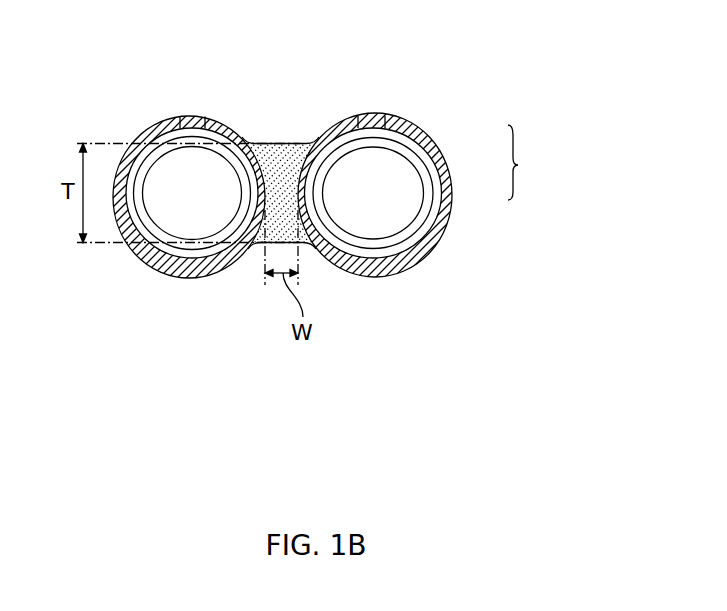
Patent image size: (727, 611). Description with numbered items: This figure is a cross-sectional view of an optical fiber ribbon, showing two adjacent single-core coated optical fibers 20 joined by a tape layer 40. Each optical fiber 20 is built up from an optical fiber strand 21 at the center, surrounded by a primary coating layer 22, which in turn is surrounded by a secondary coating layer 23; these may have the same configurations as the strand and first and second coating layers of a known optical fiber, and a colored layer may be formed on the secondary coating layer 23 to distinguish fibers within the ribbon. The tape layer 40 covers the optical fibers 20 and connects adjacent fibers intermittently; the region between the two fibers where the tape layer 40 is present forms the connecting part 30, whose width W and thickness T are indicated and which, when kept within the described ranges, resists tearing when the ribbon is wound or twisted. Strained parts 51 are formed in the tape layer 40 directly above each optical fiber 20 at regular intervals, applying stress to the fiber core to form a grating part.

The optical fiber 20 is at (531, 162).
The optical fiber strand 21 is at (405, 163).
The primary coating layer 22 is at (427, 182).
The secondary coating layer 23 is at (433, 207).
The connecting part 30 is at (278, 162).
The tape layer 40 is at (388, 118).
The strained part 51 is at (190, 115).